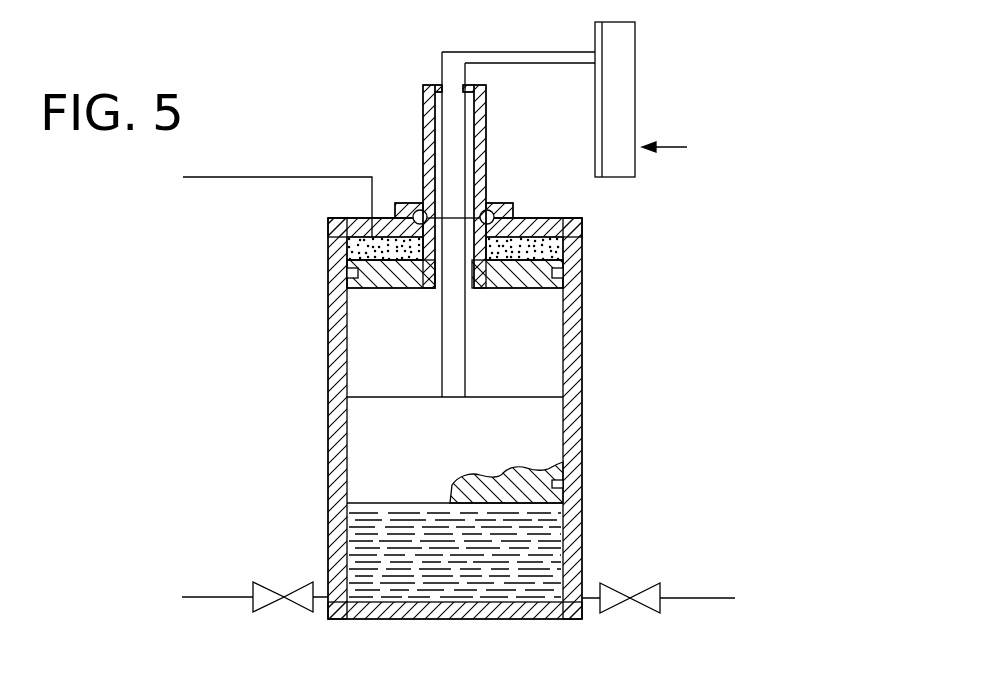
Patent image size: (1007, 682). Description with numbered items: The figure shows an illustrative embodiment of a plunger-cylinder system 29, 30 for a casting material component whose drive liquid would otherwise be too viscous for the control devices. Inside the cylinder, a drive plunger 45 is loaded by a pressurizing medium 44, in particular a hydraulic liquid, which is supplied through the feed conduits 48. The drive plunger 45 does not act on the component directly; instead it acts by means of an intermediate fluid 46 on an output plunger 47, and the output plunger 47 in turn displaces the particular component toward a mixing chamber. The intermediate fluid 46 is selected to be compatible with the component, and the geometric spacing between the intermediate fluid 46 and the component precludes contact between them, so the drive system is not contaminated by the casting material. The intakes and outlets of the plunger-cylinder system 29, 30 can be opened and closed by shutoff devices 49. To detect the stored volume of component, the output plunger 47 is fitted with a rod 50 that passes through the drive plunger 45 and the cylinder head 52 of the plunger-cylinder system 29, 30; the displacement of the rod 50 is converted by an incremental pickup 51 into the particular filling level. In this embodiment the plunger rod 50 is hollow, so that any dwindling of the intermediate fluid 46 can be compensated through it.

The plunger-cylinder system 29 is at (551, 418).
The plunger-cylinder system 30 is at (602, 469).
The pressurizing medium 44 is at (552, 253).
The drive plunger 45 is at (358, 268).
The intermediate fluid 46 is at (543, 378).
The output plunger 47 is at (360, 460).
The feed conduit 48 is at (308, 177).
The shutoff device 49 is at (262, 604).
The rod 50 is at (443, 79).
The incremental pickup 51 is at (664, 71).
The cylinder head 52 is at (527, 222).